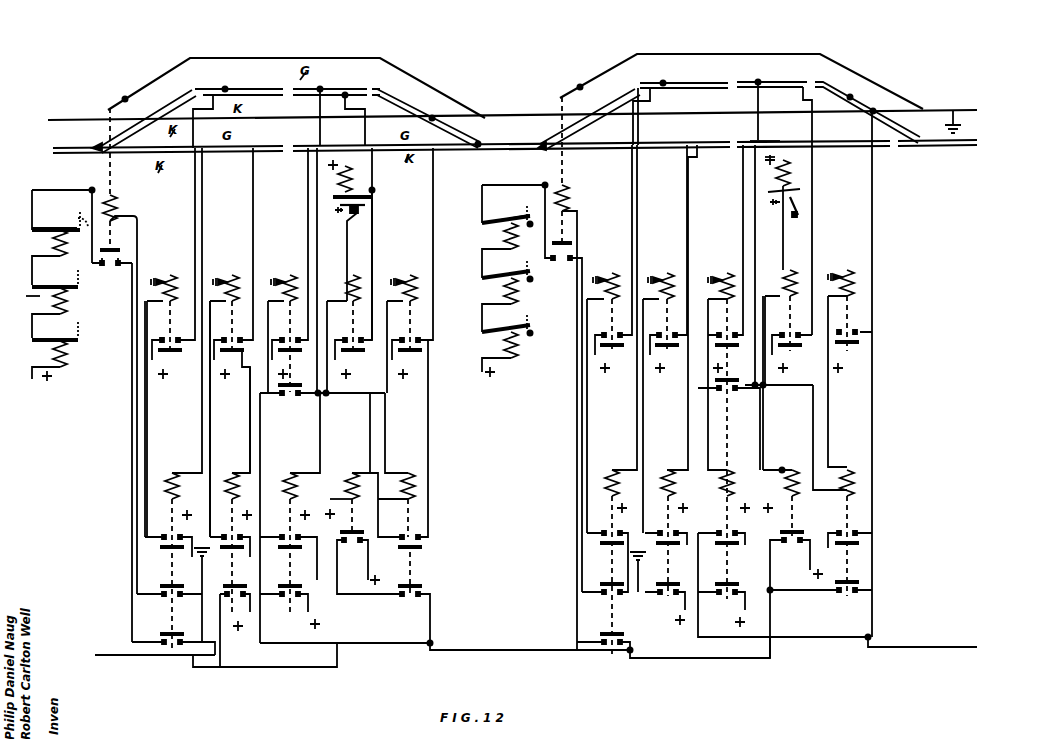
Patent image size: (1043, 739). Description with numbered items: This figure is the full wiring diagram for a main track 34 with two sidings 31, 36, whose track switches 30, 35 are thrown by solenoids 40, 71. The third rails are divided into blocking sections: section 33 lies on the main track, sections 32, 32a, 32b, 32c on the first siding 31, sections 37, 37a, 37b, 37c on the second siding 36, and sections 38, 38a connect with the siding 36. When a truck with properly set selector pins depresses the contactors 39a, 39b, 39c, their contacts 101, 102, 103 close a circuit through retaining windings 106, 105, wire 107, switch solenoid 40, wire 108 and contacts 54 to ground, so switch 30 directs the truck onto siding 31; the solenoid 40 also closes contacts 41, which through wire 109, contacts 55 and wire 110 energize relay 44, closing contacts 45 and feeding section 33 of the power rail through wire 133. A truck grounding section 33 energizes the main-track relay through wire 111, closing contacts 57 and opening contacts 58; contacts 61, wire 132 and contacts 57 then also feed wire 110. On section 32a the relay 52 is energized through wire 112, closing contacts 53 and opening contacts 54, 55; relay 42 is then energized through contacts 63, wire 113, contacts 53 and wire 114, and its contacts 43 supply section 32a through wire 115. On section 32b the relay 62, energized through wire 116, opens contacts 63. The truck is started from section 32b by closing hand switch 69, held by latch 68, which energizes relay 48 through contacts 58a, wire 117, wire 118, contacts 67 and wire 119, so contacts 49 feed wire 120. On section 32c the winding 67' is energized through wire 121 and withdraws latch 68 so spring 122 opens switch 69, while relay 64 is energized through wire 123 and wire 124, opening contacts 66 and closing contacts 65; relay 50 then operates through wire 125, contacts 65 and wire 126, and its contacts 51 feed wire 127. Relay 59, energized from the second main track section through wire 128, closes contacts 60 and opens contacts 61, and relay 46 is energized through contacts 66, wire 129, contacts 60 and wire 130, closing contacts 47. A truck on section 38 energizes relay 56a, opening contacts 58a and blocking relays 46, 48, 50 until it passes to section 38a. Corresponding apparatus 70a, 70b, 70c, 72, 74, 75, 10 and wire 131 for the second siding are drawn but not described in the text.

The switch device 10 is at (791, 212).
The track switch 30 is at (108, 103).
The siding 31 is at (296, 76).
The third rail blocking section 32 is at (144, 121).
The third rail section 32a is at (238, 108).
The third rail section 32b is at (330, 107).
The third rail section 32c is at (426, 118).
The third rail blocking section 33 is at (515, 142).
The main track 34 is at (268, 99).
The track switch 35 is at (560, 94).
The siding 36 is at (741, 72).
The third rail blocking section 37 is at (589, 118).
The third rail blocking section 37a is at (680, 103).
The third rail blocking section 37b is at (774, 197).
The third rail blocking section 37c is at (867, 110).
The track section 38 is at (779, 124).
The track section 38a is at (778, 131).
The contactor 39a is at (63, 225).
The contactor 39b is at (55, 278).
The contactor 39c is at (55, 330).
The switch solenoid 40 is at (121, 220).
The contacts 41 is at (112, 265).
The relay 42 is at (162, 396).
The contacts 43 is at (172, 358).
The relay 44 is at (224, 396).
The contacts 45 is at (233, 405).
The relay 46 is at (283, 324).
The contacts 47 is at (292, 358).
The relay 48 is at (343, 324).
The contacts 49 is at (353, 358).
The relay 50 is at (402, 324).
The contacts 51 is at (411, 358).
The relay 52 is at (177, 552).
The contacts 53 is at (177, 588).
The contacts 54 is at (169, 600).
The contacts 55 is at (192, 554).
The relay 56a is at (670, 370).
The contacts 57 is at (232, 553).
The contacts 58 is at (235, 626).
The contacts 58a is at (665, 605).
The relay 59 is at (296, 533).
The contacts 60 is at (288, 557).
The contacts 61 is at (290, 607).
The relay 62 is at (342, 494).
The contacts 63 is at (369, 563).
The relay 64 is at (406, 495).
The contacts 65 is at (420, 564).
The contacts 66 is at (415, 616).
The contacts 67 is at (322, 398).
The winding 67' is at (378, 185).
The latch 68 is at (375, 193).
The hand switch 69 is at (375, 210).
The relay coil 70a is at (515, 230).
The relay coil 70b is at (507, 294).
The relay coil 70c is at (507, 343).
The switch solenoid 71 is at (573, 416).
The contact 72 is at (563, 388).
The relay coil 74 is at (609, 339).
The relay contact 75 is at (613, 353).
The contact 101 is at (40, 242).
The contact 102 is at (74, 295).
The contact 103 is at (80, 340).
The retaining winding 105 is at (23, 294).
The retaining winding 106 is at (66, 354).
The wire 107 is at (67, 191).
The wire 108 is at (139, 222).
The wire 109 is at (132, 400).
The wire 110 is at (188, 396).
The wire 111 is at (248, 420).
The wire 112 is at (191, 414).
The wire 113 is at (216, 665).
The wire 114 is at (155, 386).
The wire 115 is at (195, 189).
The wire 116 is at (322, 407).
The wire 117 is at (501, 645).
The wire 118 is at (345, 654).
The wire 119 is at (324, 378).
The wire 120 is at (364, 258).
The wire 121 is at (388, 157).
The spring 122 is at (368, 227).
The wire 123 is at (380, 505).
The wire 124 is at (388, 426).
The wire 125 is at (370, 431).
The wire 126 is at (431, 445).
The wire 127 is at (433, 206).
The wire 128 is at (302, 438).
The wire 129 is at (385, 594).
The wire 130 is at (280, 518).
The conductor 131 is at (308, 188).
The wire 132 is at (273, 593).
The wire 133 is at (253, 180).